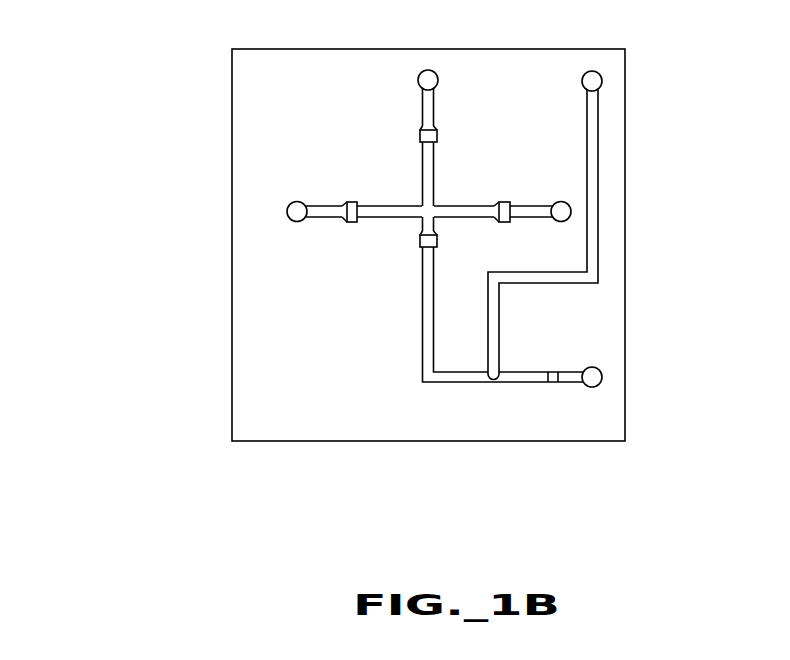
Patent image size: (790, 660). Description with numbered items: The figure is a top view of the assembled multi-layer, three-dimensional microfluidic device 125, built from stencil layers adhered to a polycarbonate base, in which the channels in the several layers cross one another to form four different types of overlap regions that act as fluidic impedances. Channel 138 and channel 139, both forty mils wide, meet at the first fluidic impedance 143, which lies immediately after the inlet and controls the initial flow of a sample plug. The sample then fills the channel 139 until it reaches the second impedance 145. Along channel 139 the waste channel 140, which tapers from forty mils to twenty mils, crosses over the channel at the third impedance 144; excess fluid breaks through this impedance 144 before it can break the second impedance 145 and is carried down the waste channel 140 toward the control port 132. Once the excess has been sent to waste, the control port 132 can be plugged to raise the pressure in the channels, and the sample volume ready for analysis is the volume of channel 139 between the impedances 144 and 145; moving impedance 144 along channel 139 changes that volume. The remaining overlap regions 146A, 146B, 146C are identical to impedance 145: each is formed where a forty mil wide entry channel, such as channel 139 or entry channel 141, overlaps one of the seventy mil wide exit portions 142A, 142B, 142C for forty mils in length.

The microfluidic chip 125 is at (140, 60).
The control port 132 is at (595, 80).
The channel 138 is at (572, 385).
The channel 139 is at (428, 323).
The waste channel 140 is at (590, 218).
The entry channel 141 is at (465, 210).
The exit portion 142A is at (290, 213).
The exit portion 142B is at (425, 78).
The exit portion 142C is at (571, 210).
The first fluidic impedance 143 is at (550, 383).
The third impedance 144 is at (493, 376).
The second impedance 145 is at (422, 242).
The overlap region 146A is at (348, 203).
The overlap region 146B is at (437, 136).
The overlap region 146C is at (510, 204).